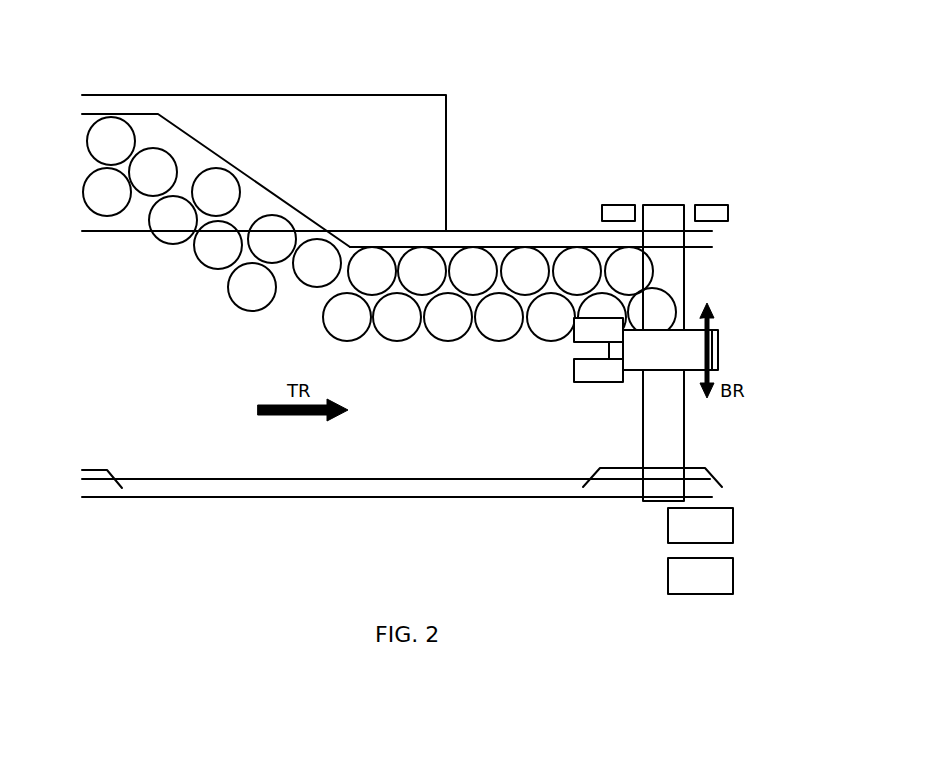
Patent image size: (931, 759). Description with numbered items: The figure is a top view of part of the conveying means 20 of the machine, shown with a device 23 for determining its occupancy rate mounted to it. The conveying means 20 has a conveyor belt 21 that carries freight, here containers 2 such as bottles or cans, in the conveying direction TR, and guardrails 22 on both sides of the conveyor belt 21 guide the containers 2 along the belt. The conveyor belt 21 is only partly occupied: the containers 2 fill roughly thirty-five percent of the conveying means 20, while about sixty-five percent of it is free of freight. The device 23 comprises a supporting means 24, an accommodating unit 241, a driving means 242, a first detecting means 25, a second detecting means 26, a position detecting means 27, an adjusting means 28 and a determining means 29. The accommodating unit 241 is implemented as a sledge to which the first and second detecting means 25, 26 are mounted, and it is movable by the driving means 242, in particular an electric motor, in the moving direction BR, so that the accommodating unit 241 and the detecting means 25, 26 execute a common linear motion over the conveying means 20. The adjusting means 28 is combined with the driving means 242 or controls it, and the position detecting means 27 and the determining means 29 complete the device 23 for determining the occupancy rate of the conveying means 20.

The conveying means 20 is at (97, 65).
The container 2 is at (175, 244).
The conveyor belt 21 is at (409, 461).
The guardrails 22 is at (497, 237).
The device for determining an occupancy rate 23 is at (706, 165).
The supporting means 24 is at (685, 415).
The accommodating unit 241 is at (718, 345).
The driving means 242 is at (620, 203).
The first detecting means 25 is at (573, 340).
The second detecting means 26 is at (597, 380).
The position detecting means 27 is at (728, 210).
The adjusting means 28 is at (733, 520).
The determining means 29 is at (733, 570).